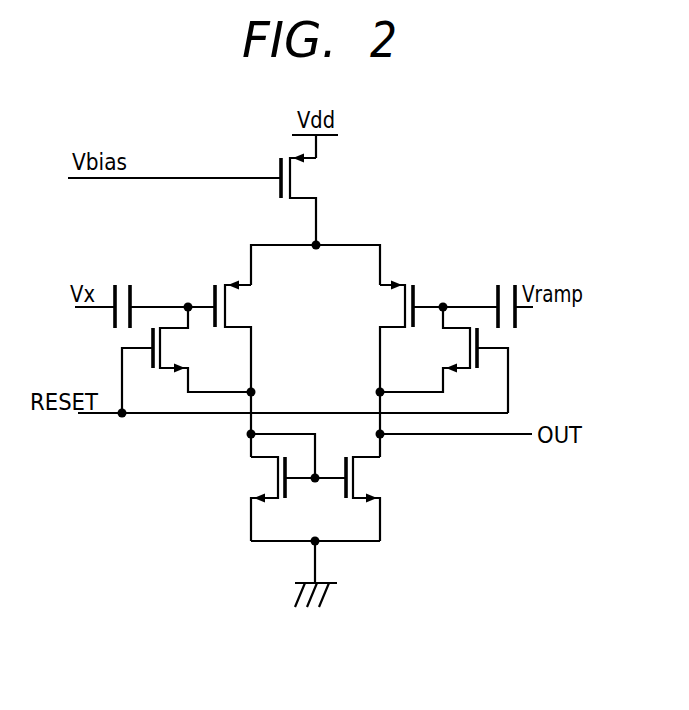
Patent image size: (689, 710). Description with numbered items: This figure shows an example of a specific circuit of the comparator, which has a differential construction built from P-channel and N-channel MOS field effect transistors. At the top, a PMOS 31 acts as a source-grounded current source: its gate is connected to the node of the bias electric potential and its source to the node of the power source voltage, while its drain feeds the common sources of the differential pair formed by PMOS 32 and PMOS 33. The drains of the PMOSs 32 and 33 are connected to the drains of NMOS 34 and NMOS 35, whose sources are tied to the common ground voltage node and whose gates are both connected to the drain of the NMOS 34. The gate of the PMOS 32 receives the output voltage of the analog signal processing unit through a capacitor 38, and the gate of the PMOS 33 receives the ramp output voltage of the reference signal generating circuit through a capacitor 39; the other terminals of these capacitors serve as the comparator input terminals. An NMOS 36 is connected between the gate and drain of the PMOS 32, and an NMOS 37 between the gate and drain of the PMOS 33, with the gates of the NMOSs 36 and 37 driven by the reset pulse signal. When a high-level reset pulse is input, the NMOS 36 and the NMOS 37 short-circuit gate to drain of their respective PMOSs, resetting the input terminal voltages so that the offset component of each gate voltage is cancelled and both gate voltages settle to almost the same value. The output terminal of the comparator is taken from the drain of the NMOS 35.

The PMOS 31 is at (312, 178).
The PMOS 32 is at (236, 307).
The PMOS 33 is at (393, 307).
The NMOS 34 is at (265, 478).
The NMOS 35 is at (368, 478).
The NMOS 36 is at (172, 350).
The NMOS 37 is at (457, 350).
The capacitor 38 is at (123, 283).
The capacitor 39 is at (507, 283).